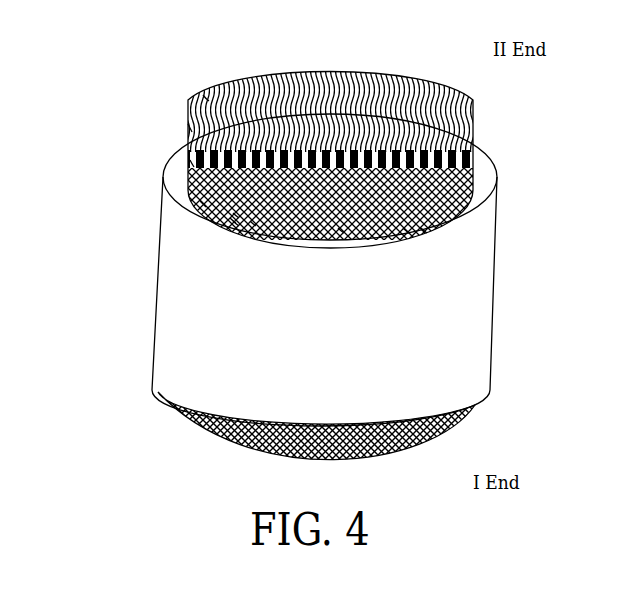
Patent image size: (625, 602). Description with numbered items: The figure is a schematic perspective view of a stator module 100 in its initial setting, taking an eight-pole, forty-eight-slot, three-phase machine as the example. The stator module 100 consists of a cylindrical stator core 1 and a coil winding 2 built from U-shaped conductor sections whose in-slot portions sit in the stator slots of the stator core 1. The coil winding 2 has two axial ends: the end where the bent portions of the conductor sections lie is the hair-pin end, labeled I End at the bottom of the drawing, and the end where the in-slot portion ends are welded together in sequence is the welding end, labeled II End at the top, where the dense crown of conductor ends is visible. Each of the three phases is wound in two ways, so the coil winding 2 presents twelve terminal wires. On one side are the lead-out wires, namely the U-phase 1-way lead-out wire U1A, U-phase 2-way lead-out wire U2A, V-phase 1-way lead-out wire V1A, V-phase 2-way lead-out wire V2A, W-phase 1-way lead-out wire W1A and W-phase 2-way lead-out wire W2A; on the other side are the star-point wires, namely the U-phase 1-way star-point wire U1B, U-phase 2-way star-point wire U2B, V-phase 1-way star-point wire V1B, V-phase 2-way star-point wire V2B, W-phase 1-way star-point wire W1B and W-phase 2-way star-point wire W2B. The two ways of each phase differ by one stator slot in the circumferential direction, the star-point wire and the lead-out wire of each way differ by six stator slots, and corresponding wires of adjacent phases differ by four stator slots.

The stator module 100 is at (310, 235).
The stator core 1 is at (485, 248).
The coil winding 2 is at (470, 182).
The U-phase 2-way star-point wire U2B is at (205, 98).
The U-phase 1-way star-point wire U1B is at (188, 128).
The W-phase 1-way star-point wire W1B is at (190, 163).
The W-phase 2-way star-point wire W2B is at (200, 205).
The V-phase 1-way star-point wire V1B is at (233, 217).
The V-phase 2-way star-point wire V2B is at (230, 222).
The W-phase 2-way lead-out wire W2A is at (252, 225).
The W-phase 1-way lead-out wire W1A is at (235, 225).
The V-phase 2-way lead-out wire V2A is at (340, 232).
The V-phase 1-way lead-out wire V1A is at (317, 232).
The U-phase 2-way lead-out wire U2A is at (423, 232).
The U-phase 1-way lead-out wire U1A is at (405, 232).